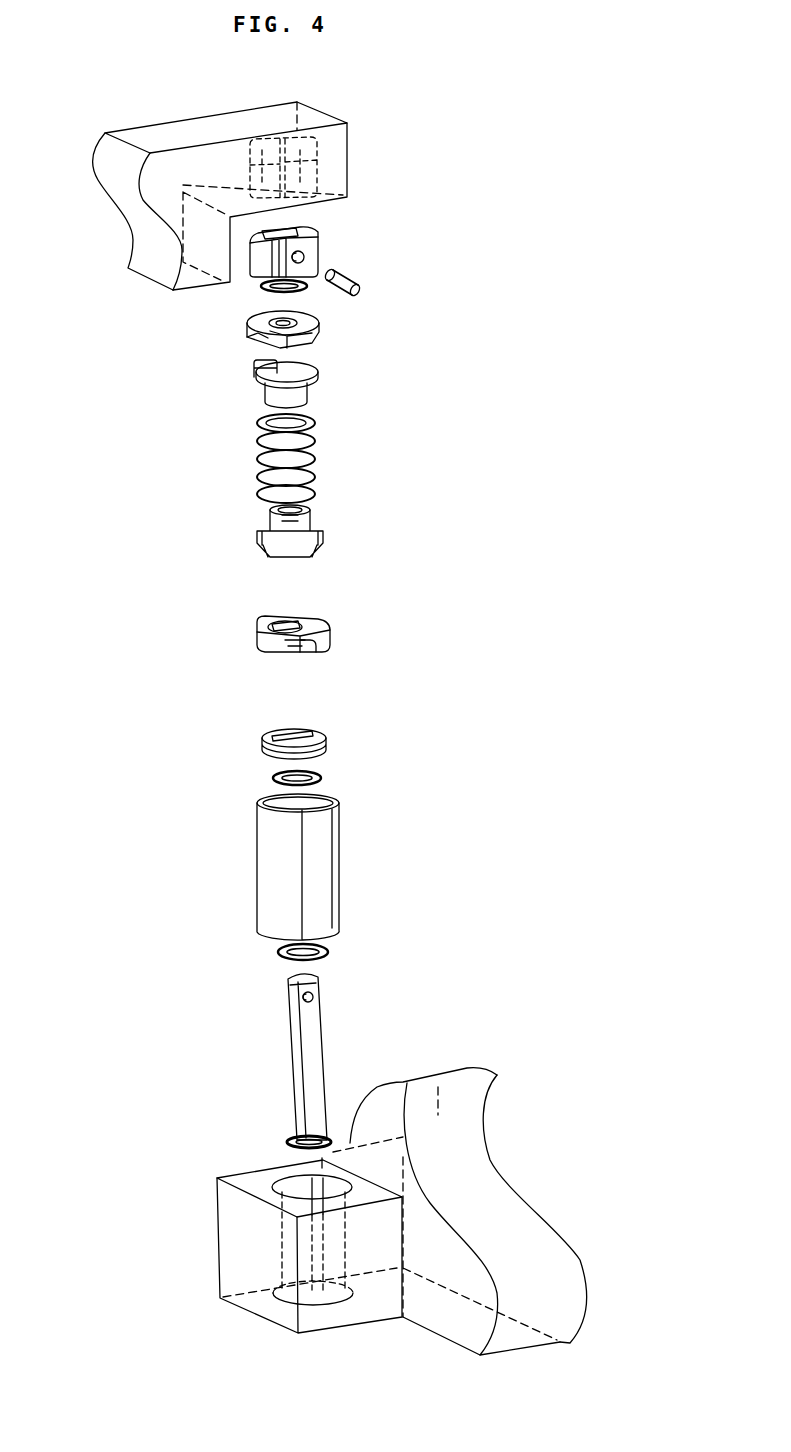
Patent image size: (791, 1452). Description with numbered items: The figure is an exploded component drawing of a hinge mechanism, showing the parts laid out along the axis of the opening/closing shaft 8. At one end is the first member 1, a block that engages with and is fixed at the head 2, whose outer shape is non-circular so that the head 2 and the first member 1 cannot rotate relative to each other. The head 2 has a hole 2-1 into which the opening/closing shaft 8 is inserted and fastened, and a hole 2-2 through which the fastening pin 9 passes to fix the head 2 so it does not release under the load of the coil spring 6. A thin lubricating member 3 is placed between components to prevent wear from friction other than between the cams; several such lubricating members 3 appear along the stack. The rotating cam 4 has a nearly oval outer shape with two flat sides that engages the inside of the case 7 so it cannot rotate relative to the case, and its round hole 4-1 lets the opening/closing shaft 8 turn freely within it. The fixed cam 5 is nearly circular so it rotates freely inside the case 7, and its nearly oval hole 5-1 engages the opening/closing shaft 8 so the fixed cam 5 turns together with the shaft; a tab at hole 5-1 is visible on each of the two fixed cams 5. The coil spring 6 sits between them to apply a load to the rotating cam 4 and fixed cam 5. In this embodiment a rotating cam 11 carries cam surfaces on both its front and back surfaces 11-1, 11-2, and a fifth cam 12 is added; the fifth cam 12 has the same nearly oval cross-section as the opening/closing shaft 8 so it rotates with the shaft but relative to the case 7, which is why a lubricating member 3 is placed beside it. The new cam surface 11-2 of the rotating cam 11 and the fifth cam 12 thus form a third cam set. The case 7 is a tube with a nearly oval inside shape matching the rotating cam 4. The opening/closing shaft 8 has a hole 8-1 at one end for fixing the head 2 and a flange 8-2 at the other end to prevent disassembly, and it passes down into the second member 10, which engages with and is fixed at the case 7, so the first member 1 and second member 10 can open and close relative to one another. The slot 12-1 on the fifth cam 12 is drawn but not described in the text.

The first member 1 is at (168, 181).
The head 2 is at (317, 245).
The hole 2-1 is at (290, 228).
The hole 2-2 is at (316, 252).
The lubricating member 3 is at (307, 288).
The rotating cam 4 is at (320, 336).
The hole 4-1 is at (250, 337).
The fixed cam 5 is at (317, 374).
The hole 5-1 is at (262, 377).
The coil spring 6 is at (310, 463).
The case 7 is at (273, 872).
The opening/closing shaft 8 is at (310, 1083).
The hole 8-1 is at (312, 998).
The flange 8-2 is at (278, 1139).
The fastening pin 9 is at (366, 289).
The second member 10 is at (232, 1232).
The rotating cam 11 is at (332, 638).
The front surface 11-1 is at (287, 602).
The cam surface 11-2 is at (290, 673).
The fifth cam 12 is at (327, 748).
The disc slot 12-1 is at (312, 728).